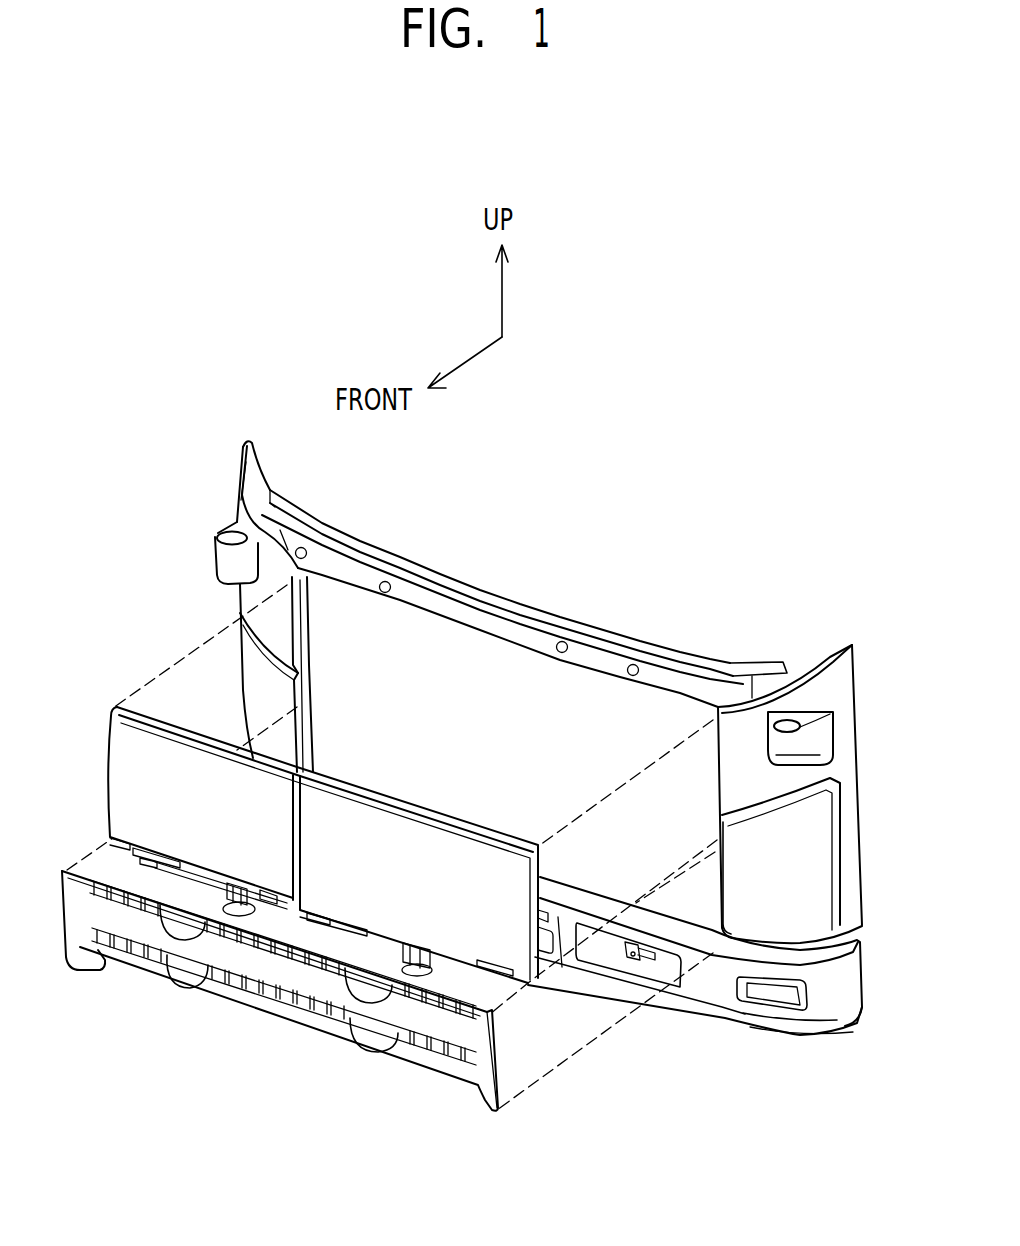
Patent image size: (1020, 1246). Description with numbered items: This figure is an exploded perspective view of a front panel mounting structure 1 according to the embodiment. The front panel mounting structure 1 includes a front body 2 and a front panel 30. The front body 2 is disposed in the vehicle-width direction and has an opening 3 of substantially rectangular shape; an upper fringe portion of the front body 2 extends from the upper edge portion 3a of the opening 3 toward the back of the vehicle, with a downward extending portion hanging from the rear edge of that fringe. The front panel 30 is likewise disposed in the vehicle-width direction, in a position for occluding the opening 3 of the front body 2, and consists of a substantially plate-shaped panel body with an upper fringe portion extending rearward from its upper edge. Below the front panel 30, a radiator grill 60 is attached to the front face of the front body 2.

The front panel mounting structure 1 is at (224, 405).
The front body 2 is at (870, 681).
The opening 3 is at (306, 624).
The upper edge portion 3a is at (465, 628).
The front panel 30 is at (105, 744).
The radiator grill 60 is at (136, 980).